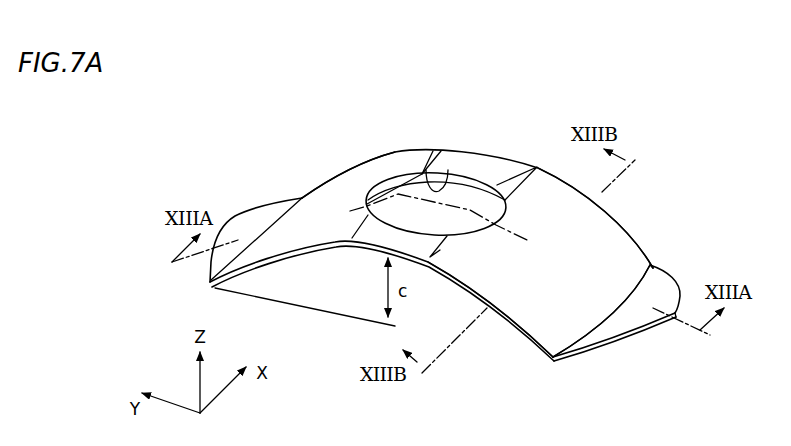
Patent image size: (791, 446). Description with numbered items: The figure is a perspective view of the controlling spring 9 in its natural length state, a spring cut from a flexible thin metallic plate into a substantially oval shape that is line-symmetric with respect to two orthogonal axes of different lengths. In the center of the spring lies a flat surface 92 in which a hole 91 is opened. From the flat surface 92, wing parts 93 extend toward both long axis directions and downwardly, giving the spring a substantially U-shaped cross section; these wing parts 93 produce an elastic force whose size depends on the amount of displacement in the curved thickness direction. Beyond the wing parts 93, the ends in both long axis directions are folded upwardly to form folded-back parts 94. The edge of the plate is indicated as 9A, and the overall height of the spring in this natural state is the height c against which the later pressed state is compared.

The controlling spring 9 is at (293, 109).
The plate edge 9A is at (391, 152).
The hole 91 is at (448, 170).
The flat surface 92 is at (497, 168).
The wing parts 93 is at (607, 227).
The folded-back parts 94 is at (256, 221).